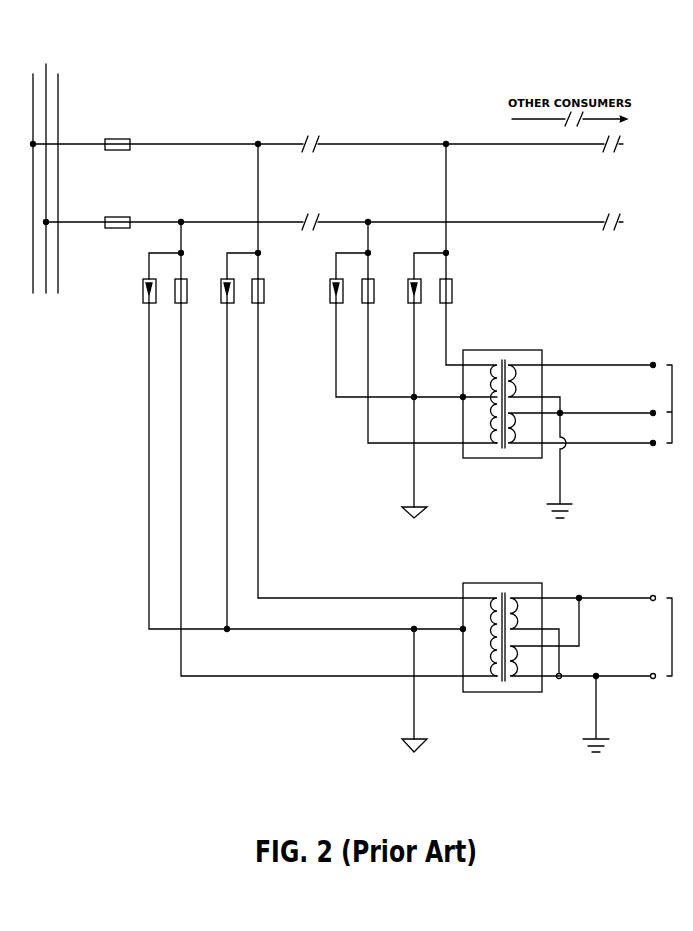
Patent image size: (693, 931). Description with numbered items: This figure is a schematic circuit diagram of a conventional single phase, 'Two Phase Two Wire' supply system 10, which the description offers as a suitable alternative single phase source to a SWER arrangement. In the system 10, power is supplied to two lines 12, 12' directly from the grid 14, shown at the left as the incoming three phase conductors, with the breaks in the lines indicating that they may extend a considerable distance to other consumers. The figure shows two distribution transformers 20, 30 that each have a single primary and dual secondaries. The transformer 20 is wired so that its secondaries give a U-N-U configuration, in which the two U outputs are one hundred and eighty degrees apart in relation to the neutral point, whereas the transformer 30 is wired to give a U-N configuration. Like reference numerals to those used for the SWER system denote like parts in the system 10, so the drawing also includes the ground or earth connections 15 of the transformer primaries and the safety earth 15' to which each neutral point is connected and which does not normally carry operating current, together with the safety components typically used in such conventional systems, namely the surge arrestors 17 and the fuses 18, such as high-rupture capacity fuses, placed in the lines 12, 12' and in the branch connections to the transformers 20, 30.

The single phase 'Two Phase Two Wire' supply system 10 is at (350, 68).
The line 12 is at (327, 129).
The line 12' is at (334, 207).
The grid 14 is at (58, 108).
The chassis ground 15 is at (430, 614).
The earth ground 15' is at (594, 614).
The surge arrester 17 is at (141, 288).
The fuse 18 is at (117, 139).
The distribution transformer 20 is at (500, 350).
The distribution transformer 30 is at (500, 583).